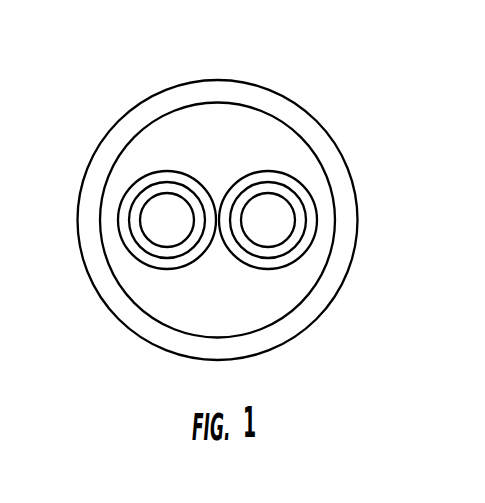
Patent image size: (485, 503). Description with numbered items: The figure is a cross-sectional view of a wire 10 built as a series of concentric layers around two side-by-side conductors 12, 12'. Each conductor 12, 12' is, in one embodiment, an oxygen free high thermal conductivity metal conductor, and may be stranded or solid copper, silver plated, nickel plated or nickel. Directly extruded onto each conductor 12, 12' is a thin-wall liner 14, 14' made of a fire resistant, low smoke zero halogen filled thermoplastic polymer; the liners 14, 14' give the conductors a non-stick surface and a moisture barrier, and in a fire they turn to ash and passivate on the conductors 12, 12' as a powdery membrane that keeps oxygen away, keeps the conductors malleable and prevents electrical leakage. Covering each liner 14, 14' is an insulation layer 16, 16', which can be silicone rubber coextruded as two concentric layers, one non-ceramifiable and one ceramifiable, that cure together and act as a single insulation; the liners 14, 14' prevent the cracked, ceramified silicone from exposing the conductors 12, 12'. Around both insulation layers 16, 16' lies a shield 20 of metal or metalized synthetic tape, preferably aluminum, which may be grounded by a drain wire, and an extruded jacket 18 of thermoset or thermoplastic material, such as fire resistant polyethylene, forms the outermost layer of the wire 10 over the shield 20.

The wire 10 is at (155, 62).
The conductor 12 is at (157, 288).
The conductor 12' is at (329, 199).
The liner 14 is at (128, 250).
The liner 14' is at (329, 234).
The insulation layer 16 is at (119, 220).
The insulation layer 16' is at (305, 260).
The jacket 18 is at (357, 215).
The shield 20 is at (290, 132).